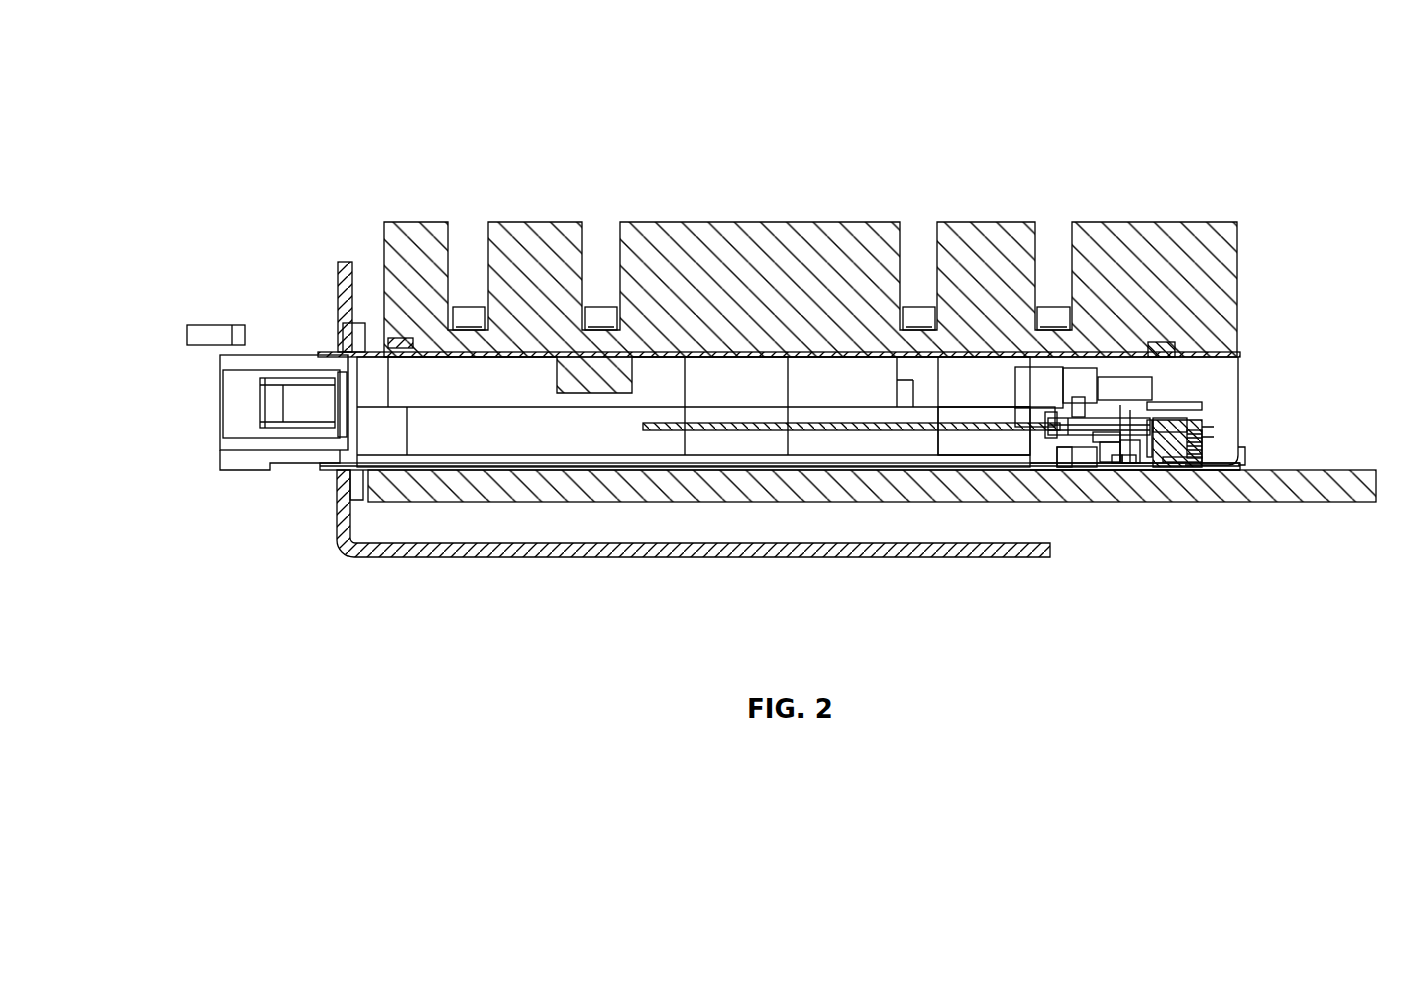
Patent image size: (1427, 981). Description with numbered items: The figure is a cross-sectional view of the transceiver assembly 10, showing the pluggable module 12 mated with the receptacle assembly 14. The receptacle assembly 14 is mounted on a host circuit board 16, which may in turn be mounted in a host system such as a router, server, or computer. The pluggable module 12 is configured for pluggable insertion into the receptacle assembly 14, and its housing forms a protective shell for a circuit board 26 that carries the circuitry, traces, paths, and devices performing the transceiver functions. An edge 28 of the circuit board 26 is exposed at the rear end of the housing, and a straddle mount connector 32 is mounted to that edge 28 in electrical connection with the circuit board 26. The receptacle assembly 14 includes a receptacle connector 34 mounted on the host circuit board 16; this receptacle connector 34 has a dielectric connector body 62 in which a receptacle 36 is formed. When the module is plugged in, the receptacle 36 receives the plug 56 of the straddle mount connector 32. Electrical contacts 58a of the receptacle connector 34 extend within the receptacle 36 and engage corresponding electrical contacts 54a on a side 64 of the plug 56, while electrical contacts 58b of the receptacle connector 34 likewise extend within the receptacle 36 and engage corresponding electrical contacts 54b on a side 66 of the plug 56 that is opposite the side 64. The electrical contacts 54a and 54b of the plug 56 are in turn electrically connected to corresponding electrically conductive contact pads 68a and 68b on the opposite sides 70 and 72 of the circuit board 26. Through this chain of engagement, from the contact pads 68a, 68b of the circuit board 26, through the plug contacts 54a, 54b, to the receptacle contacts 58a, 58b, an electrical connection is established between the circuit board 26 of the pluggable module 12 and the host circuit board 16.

The transceiver assembly 10 is at (1083, 87).
The pluggable module 12 is at (722, 395).
The receptacle assembly 14 is at (1213, 215).
The host circuit board 16 is at (1297, 490).
The circuit board 26 is at (893, 430).
The edge 28 is at (1023, 446).
The straddle mount connector 32 is at (1080, 470).
The receptacle connector 34 is at (1190, 393).
The receptacle 36 is at (1182, 503).
The electrical contacts 54a is at (1147, 375).
The electrical contacts 54b is at (1118, 470).
The plug 56 is at (1127, 502).
The electrical contacts 58a is at (1128, 425).
The electrical contacts 58b is at (1113, 470).
The dielectric connector body 62 is at (1203, 408).
The side 64 is at (1108, 412).
The side 66 is at (1102, 470).
The electrically conductive contact pads 68a is at (1160, 342).
The electrically conductive contact pads 68b is at (1055, 470).
The side 70 is at (988, 418).
The side 72 is at (978, 455).